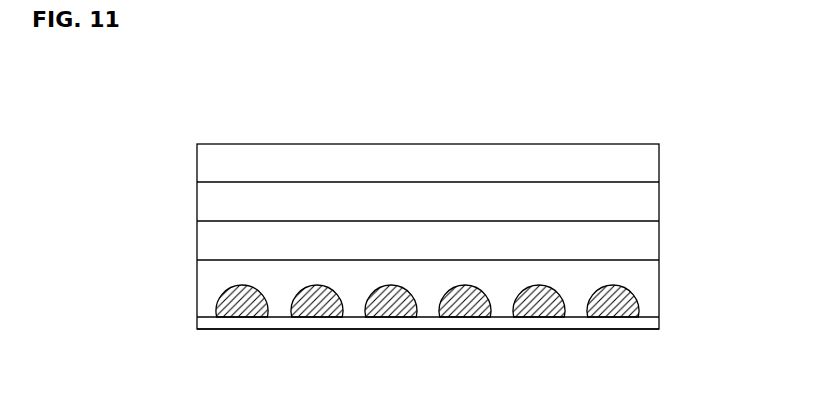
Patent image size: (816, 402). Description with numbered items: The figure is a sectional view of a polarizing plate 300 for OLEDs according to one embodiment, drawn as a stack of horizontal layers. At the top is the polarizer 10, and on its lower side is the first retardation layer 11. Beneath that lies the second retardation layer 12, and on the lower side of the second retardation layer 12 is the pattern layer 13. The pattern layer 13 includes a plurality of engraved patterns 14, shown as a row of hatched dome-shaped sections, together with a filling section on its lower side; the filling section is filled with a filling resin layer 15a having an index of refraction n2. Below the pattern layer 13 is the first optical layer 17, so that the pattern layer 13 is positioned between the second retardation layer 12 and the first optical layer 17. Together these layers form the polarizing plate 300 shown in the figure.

The polarizing plate 300 is at (641, 114).
The polarizer 10 is at (213, 164).
The first retardation layer 11 is at (213, 202).
The second retardation layer 12 is at (213, 240).
The pattern layer 13 is at (213, 279).
The engraved patterns 14 is at (245, 286).
The filling resin layer 15a is at (465, 303).
The first optical layer 17 is at (213, 322).